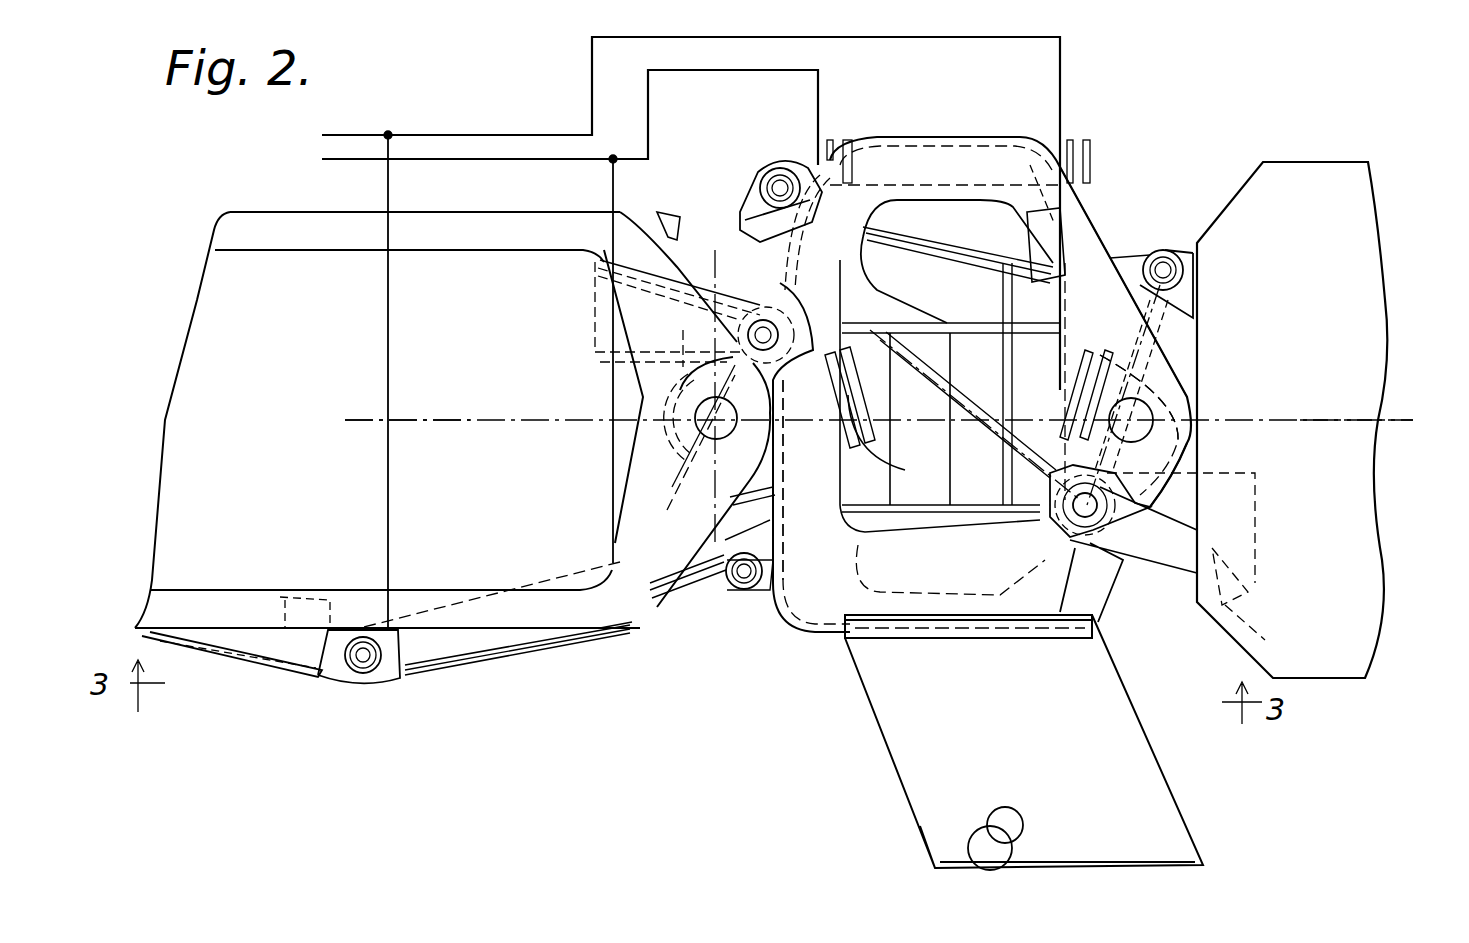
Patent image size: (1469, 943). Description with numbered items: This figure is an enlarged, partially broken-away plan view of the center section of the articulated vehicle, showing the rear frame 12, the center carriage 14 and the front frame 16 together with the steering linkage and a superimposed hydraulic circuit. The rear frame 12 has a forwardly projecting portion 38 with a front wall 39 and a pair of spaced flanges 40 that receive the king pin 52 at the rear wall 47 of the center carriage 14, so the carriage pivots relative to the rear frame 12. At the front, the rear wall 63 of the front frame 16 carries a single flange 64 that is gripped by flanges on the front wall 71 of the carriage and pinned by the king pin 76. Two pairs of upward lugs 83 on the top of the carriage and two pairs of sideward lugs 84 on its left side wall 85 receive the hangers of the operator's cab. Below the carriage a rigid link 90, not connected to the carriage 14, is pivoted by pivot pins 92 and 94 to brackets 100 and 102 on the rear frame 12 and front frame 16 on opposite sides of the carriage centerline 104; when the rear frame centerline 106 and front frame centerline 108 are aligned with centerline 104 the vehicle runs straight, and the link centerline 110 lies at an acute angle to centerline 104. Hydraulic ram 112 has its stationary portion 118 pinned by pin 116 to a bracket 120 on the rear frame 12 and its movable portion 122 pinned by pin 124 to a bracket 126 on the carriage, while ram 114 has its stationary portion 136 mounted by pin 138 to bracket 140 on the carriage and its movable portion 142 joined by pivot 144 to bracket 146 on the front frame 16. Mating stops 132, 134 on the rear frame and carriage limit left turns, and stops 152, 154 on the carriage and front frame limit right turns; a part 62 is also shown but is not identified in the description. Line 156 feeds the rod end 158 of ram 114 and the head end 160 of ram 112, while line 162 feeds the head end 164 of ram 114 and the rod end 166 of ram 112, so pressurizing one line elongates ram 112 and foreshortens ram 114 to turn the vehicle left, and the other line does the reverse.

The rear frame 12 is at (190, 420).
The center carriage 14 is at (1012, 150).
The front frame 16 is at (1365, 355).
The forwardly projecting portion 38 is at (625, 535).
The front wall 39 is at (740, 523).
The flanges 40 is at (740, 460).
The rear wall 47 is at (780, 387).
The pivot pin 52 is at (700, 422).
The lever arm 62 is at (1187, 368).
The rear wall 63 is at (1190, 452).
The flange 64 is at (1183, 347).
The front wall 71 is at (1026, 384).
The pivot pin 76 is at (1145, 418).
The lugs 83 is at (825, 160).
The lugs 84 is at (850, 360).
The left side wall 85 is at (948, 150).
The rigid link 90 is at (965, 435).
The pivot pin 92 is at (770, 315).
The pivot pin 94 is at (1060, 545).
The bracket 100 is at (700, 305).
The bracket 102 is at (1173, 548).
The centerline 104 is at (817, 423).
The centerline 106 is at (478, 420).
The centerline 108 is at (1318, 420).
The centerline 110 is at (985, 450).
The hydraulic ram 112 is at (535, 645).
The hydraulic ram 114 is at (893, 237).
The pin 116 is at (363, 660).
The stationary portion 118 is at (452, 660).
The bracket 120 is at (255, 645).
The movable portion 122 is at (683, 590).
The pin 124 is at (745, 580).
The bracket 126 is at (768, 585).
The stop 132 is at (662, 225).
The stop 134 is at (765, 240).
The stationary portion 136 is at (975, 255).
The pin 138 is at (775, 182).
The bracket 140 is at (816, 239).
The movable portion 142 is at (1135, 250).
The pivot 144 is at (1160, 270).
The bracket 146 is at (1183, 290).
The stop 152 is at (1125, 620).
The stop 154 is at (1215, 563).
The line 156 is at (825, 37).
The rod end 158 is at (1055, 225).
The head end 160 is at (397, 680).
The line 162 is at (808, 68).
The head end 164 is at (822, 165).
The rod end 166 is at (610, 640).